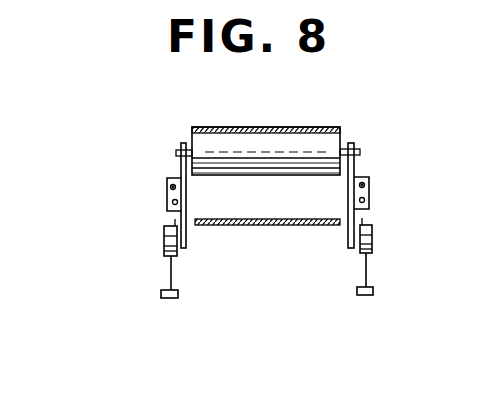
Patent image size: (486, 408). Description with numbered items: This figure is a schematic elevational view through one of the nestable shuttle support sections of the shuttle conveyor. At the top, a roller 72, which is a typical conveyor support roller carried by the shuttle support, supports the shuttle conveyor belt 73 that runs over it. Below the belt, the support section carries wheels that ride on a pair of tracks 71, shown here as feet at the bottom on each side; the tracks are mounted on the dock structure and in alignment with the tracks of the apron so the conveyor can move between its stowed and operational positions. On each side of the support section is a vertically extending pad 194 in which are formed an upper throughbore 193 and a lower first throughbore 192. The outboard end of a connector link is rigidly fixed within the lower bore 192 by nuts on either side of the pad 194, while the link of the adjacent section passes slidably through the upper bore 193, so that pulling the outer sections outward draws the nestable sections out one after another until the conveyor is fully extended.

The track 71 is at (165, 278).
The roller 72 is at (225, 148).
The shuttle conveyor belt 73 is at (318, 128).
The lower first throughbore 192 is at (167, 208).
The upper throughbore 193 is at (167, 190).
The vertically extending pad 194 is at (168, 183).